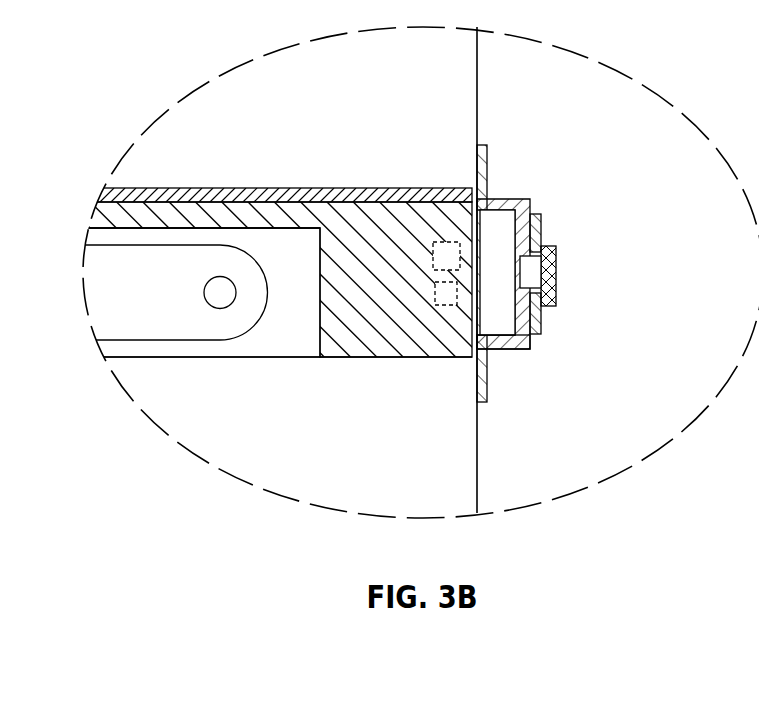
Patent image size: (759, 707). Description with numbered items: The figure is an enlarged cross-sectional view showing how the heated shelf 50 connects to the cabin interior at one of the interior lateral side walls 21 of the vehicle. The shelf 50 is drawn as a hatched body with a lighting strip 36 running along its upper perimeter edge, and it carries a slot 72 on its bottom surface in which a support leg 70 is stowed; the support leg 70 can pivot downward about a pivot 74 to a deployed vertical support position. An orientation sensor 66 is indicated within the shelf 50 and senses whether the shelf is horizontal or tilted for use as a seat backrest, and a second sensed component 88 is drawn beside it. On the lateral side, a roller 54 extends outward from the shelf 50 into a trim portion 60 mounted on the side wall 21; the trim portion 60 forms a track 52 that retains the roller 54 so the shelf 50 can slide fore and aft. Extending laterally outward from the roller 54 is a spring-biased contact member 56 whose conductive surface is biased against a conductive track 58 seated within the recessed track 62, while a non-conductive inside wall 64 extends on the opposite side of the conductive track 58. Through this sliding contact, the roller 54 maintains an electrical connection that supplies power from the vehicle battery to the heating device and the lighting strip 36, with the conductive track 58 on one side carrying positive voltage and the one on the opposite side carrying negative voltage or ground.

The interior lateral side wall 21 is at (478, 80).
The lighting strip 36 is at (418, 188).
The shelf 50 is at (155, 189).
The track 52 is at (566, 146).
The roller 54 is at (503, 220).
The spring-biased contact member 56 is at (541, 243).
The conductive track 58 is at (548, 268).
The trim portion 60 is at (540, 343).
The recessed track 62 is at (545, 287).
The non-conductive inside wall 64 is at (548, 313).
The orientation sensor 66 is at (433, 258).
The support leg 70 is at (150, 317).
The slot 72 is at (294, 245).
The pivot 74 is at (220, 294).
The sensor 88 is at (436, 296).